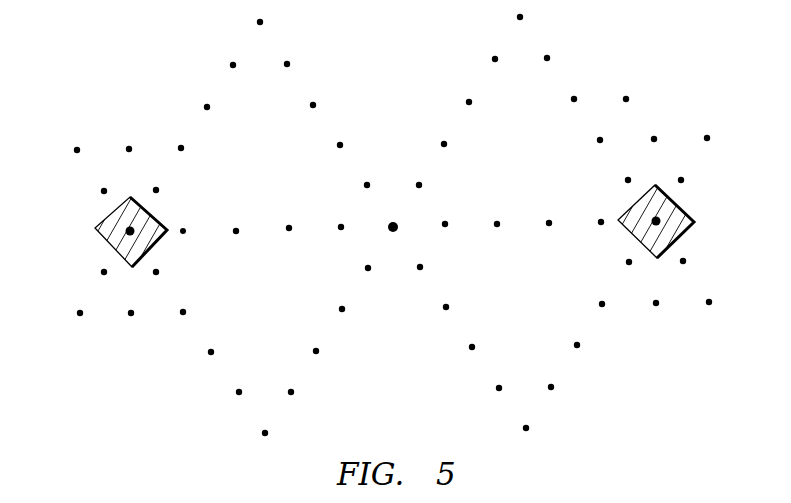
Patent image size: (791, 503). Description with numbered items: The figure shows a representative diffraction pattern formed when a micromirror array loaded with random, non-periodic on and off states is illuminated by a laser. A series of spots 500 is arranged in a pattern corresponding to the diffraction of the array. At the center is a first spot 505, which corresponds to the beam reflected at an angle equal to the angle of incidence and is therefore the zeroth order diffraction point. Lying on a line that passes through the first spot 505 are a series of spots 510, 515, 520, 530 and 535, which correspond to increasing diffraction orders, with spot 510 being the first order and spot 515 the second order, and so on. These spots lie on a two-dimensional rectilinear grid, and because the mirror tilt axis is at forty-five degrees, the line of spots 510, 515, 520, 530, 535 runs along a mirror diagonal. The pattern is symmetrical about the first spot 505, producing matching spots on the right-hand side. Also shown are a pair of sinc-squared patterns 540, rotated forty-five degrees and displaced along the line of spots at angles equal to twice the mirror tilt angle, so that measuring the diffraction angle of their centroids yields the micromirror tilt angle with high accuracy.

The series of spots 500 is at (649, 59).
The first spot 505 is at (392, 220).
The spot 510 is at (341, 236).
The spot 515 is at (290, 222).
The spot 520 is at (236, 237).
The spot 530 is at (184, 226).
The spot 535 is at (127, 229).
The [sin(x)/x]^2 pattern 540 is at (105, 240).